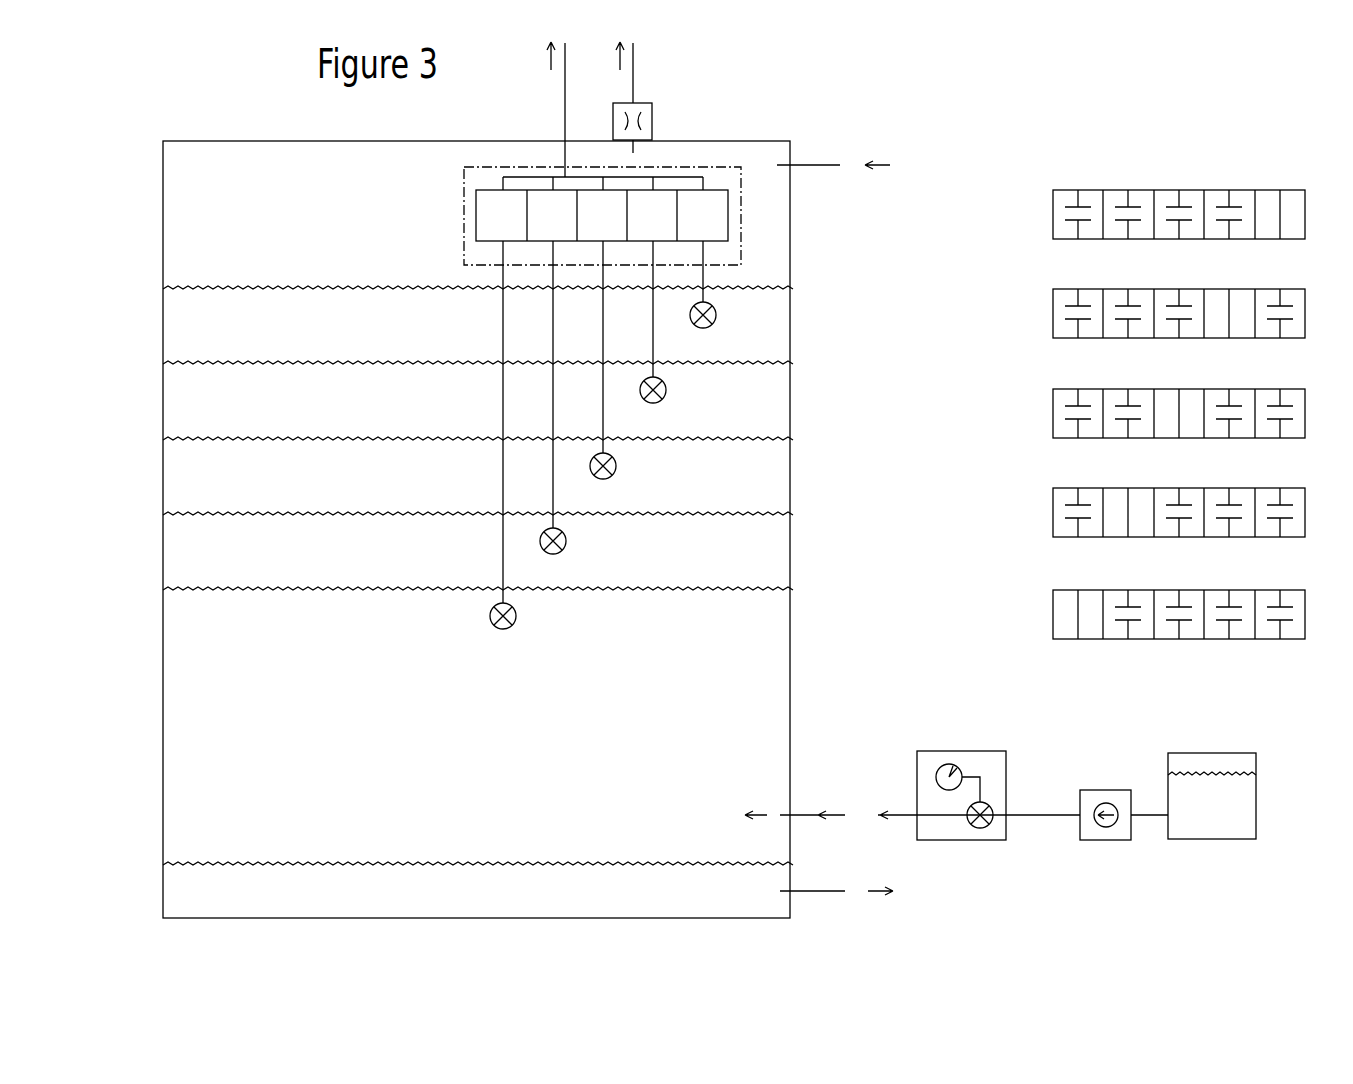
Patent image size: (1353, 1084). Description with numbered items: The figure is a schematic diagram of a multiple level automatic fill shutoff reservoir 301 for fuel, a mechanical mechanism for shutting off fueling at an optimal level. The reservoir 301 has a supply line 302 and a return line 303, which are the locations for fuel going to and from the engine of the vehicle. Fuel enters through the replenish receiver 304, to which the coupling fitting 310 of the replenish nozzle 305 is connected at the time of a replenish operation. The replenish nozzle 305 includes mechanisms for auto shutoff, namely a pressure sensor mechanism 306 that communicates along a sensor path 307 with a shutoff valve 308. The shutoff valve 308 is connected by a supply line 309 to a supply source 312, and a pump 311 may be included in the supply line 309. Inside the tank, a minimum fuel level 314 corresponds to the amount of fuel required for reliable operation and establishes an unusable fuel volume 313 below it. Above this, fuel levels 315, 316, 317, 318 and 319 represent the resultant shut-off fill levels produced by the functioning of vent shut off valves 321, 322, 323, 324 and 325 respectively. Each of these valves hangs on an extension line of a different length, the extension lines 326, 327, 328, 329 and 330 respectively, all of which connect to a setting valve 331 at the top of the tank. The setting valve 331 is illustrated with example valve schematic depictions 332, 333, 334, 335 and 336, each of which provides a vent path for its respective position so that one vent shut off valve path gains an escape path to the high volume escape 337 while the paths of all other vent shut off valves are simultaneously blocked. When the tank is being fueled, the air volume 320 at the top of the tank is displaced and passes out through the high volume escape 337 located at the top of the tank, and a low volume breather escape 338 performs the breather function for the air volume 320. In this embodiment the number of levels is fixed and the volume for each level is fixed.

The reservoir 301 is at (293, 933).
The supply line 302 is at (800, 896).
The return line 303 is at (823, 150).
The replenish receiver 304 is at (808, 805).
The replenish nozzle 305 is at (928, 742).
The pressure sensor mechanism 306 is at (960, 770).
The sensor path 307 is at (988, 768).
The shutoff valve 308 is at (993, 802).
The supply line 309 is at (1032, 823).
The coupling fitting 310 is at (893, 825).
The pump 311 is at (1105, 845).
The supply source 312 is at (1203, 845).
The unusable fuel volume 313 is at (198, 890).
The minimum fuel level 314 is at (200, 857).
The fuel level 315 is at (200, 584).
The fuel level 316 is at (200, 509).
The fuel level 317 is at (200, 434).
The fuel level 318 is at (200, 358).
The fuel level 319 is at (200, 283).
The air volume 320 is at (245, 200).
The vent shut off valve 321 is at (520, 610).
The vent shut off valve 322 is at (572, 537).
The vent shut off valve 323 is at (622, 463).
The vent shut off valve 324 is at (672, 385).
The vent shut off valve 325 is at (720, 310).
The extension line 326 is at (508, 577).
The extension line 327 is at (560, 497).
The extension line 328 is at (612, 421).
The extension line 329 is at (660, 346).
The extension line 330 is at (710, 272).
The setting valve 331 is at (760, 208).
The valve schematic depiction 332 is at (1045, 610).
The valve schematic depiction 333 is at (1045, 510).
The valve schematic depiction 334 is at (1045, 410).
The valve schematic depiction 335 is at (1045, 311).
The valve schematic depiction 336 is at (1045, 212).
The high volume escape 337 is at (552, 104).
The low volume breather escape 338 is at (668, 102).